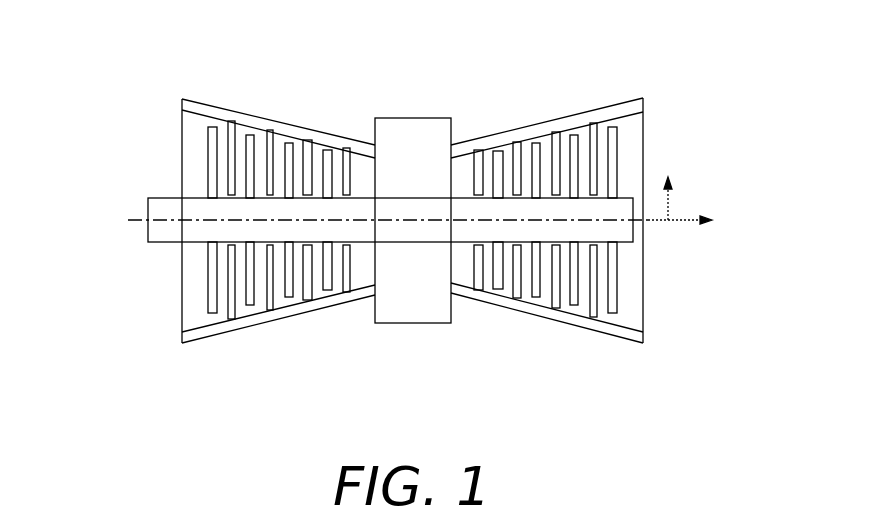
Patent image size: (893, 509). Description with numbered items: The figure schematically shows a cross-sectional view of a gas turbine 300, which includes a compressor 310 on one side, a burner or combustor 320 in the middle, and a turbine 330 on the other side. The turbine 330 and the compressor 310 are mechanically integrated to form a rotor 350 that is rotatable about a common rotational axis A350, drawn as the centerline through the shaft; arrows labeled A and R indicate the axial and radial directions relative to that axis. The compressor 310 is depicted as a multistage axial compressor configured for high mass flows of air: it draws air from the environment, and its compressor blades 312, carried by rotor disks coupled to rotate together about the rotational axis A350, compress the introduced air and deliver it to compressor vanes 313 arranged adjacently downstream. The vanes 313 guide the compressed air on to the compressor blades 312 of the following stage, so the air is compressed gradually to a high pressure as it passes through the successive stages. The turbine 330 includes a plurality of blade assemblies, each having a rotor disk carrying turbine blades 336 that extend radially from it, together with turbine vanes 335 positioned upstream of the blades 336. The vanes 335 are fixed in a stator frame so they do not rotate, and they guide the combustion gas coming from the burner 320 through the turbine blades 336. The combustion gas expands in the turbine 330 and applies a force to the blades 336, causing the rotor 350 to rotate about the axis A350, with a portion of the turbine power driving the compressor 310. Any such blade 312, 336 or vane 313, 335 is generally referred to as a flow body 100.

The gas turbine 300 is at (684, 56).
The compressor 310 is at (234, 234).
The compressor blades 312 is at (207, 138).
The compressor vanes 313 is at (232, 121).
The burner or combustor 320 is at (411, 100).
The turbine 330 is at (532, 217).
The turbine vanes 335 is at (478, 283).
The turbine blades 336 is at (498, 288).
The flow body 100 is at (496, 328).
The rotor 350 is at (163, 259).
The rotational axis A350 is at (140, 213).
The axial direction A is at (688, 223).
The radial direction R is at (668, 197).